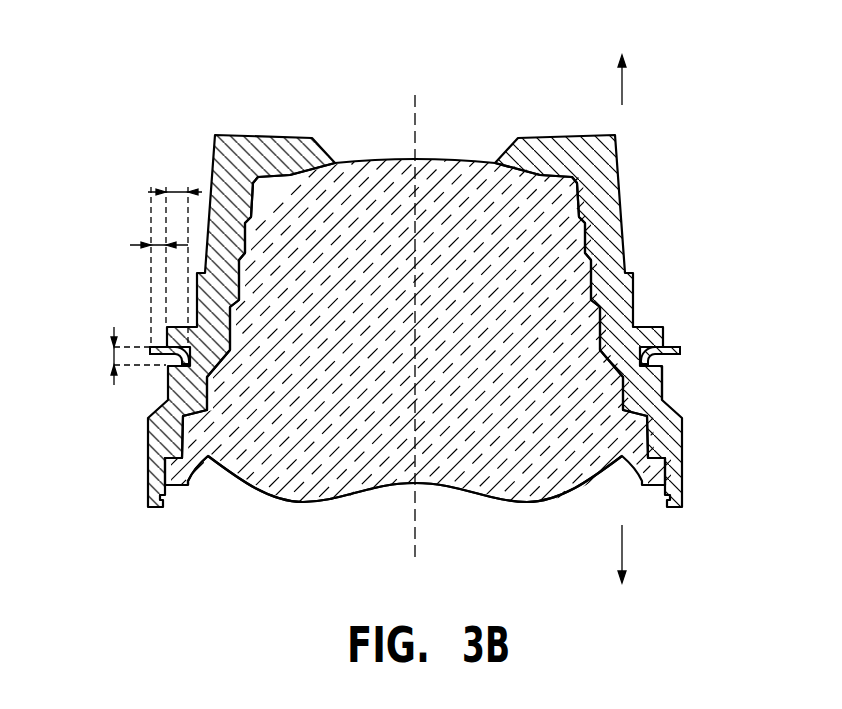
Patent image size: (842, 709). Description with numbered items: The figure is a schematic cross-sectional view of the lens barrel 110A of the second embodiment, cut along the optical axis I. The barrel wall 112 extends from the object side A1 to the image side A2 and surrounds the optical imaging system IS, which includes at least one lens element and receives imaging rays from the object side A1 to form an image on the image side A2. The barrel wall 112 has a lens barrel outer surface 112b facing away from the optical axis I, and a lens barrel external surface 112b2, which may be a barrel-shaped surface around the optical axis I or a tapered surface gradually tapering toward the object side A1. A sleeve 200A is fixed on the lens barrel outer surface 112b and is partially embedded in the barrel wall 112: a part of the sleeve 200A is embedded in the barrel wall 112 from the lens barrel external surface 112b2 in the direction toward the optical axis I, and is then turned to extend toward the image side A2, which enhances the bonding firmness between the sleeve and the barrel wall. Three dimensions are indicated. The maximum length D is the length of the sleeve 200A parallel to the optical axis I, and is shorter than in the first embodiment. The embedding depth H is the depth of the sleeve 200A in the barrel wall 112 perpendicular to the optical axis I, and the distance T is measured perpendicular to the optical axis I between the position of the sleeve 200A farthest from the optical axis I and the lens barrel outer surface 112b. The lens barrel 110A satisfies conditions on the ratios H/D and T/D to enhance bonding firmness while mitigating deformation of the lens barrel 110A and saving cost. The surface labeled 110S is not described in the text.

The lens barrel 110A is at (615, 170).
The lens side surface 110S is at (217, 487).
The optical imaging system IS is at (533, 493).
The barrel wall 112 is at (401, 323).
The lens barrel outer surface 112b is at (403, 321).
The lens barrel external surface 112b2 is at (672, 373).
The sleeve 200A is at (676, 348).
The embedding depth H is at (173, 191).
The distance T is at (156, 243).
The maximum length D is at (113, 355).
The optical axis I is at (415, 312).
The object side A1 is at (621, 63).
The image side A2 is at (621, 570).